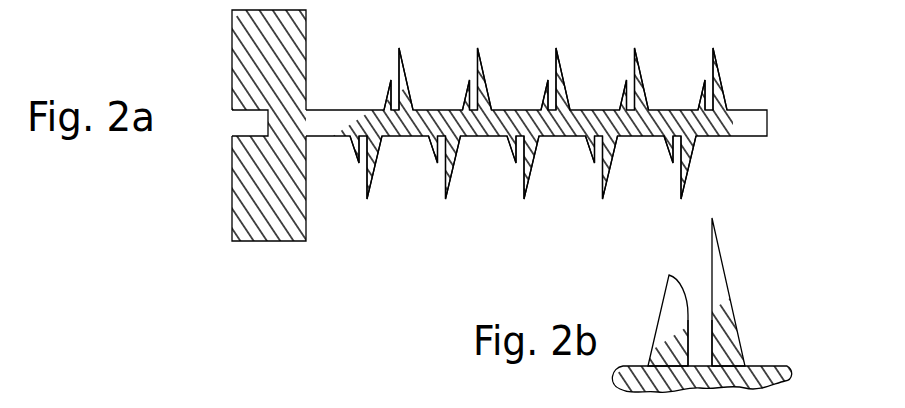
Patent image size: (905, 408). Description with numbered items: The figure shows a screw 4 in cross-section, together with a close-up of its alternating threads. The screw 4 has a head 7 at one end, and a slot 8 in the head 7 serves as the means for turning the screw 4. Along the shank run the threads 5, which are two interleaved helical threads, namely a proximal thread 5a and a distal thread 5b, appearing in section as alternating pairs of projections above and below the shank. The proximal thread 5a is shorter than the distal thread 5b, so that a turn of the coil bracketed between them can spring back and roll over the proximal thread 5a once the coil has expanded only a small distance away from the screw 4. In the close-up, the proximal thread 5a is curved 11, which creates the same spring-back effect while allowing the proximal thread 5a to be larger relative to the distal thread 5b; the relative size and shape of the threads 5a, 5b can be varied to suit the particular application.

In FIG. 2a, the screw 4 is at (745, 165).
In FIG. 2b, the screw 4 is at (776, 352).
In FIG. 2a, the threads 5 is at (519, 99).
In FIG. 2a, the proximal thread 5a is at (456, 71).
In FIG. 2b, the proximal thread 5a is at (639, 316).
In FIG. 2a, the distal thread 5b is at (465, 174).
In FIG. 2b, the distal thread 5b is at (751, 294).
In FIG. 2a, the head 7 is at (330, 196).
In FIG. 2a, the slot 8 is at (218, 128).
In FIG. 2b, the curved 11 is at (697, 307).